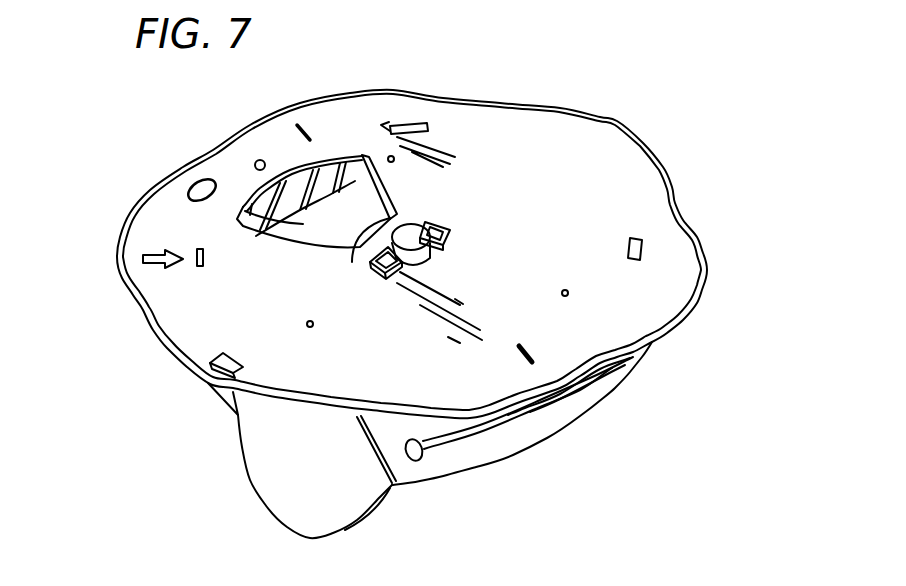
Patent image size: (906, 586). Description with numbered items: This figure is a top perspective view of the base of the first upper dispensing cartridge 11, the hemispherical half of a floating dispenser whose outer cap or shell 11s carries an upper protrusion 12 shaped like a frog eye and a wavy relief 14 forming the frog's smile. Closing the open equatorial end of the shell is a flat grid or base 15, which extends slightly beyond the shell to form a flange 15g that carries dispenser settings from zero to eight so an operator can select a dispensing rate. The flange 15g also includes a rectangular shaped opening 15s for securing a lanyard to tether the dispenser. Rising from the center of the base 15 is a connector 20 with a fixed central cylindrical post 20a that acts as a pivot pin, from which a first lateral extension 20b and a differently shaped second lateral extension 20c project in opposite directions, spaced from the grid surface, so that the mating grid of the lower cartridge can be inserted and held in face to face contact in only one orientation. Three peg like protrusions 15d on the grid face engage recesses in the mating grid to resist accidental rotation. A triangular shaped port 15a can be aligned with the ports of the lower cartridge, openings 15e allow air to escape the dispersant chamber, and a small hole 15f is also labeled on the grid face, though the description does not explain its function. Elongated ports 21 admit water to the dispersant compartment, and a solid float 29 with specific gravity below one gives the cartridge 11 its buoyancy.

The grid or base 15 is at (623, 157).
The triangular shaped port 15a is at (362, 158).
The peg like protrusions 15d is at (391, 156).
The openings 15e is at (400, 127).
The hole 15f is at (255, 163).
The flange 15g is at (683, 257).
The rectangular shaped opening 15s is at (212, 363).
The connector 20 is at (410, 233).
The central cylindrical post 20a is at (427, 260).
The first lateral extension 20b is at (443, 223).
The second lateral extension 20c is at (377, 272).
The elongated ports 21 is at (300, 223).
The solid float 29 is at (240, 213).
The first upper dispensing cartridge 11 is at (547, 430).
The outer cap or shell 11s is at (583, 413).
The upper protrusion 12 is at (333, 503).
The wavy relief 14 is at (463, 433).